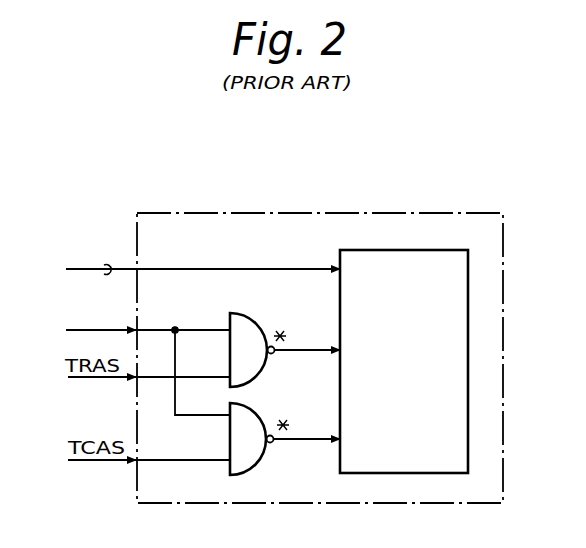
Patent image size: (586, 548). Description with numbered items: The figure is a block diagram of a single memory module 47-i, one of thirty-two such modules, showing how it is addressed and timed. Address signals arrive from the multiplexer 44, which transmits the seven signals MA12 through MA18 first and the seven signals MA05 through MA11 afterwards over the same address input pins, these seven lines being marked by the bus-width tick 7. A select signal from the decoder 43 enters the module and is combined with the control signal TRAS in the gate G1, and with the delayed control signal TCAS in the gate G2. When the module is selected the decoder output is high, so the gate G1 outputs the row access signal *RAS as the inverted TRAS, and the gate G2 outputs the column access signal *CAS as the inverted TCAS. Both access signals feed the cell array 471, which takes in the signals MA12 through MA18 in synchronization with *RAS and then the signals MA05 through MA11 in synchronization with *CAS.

The memory module 47-i is at (417, 212).
The cell array 471 is at (420, 251).
The multiplexer 44 is at (186, 251).
The bus width (7 lines) 7 is at (107, 261).
The decoder 43 is at (131, 366).
The gate G1 is at (258, 320).
The gate G2 is at (265, 408).